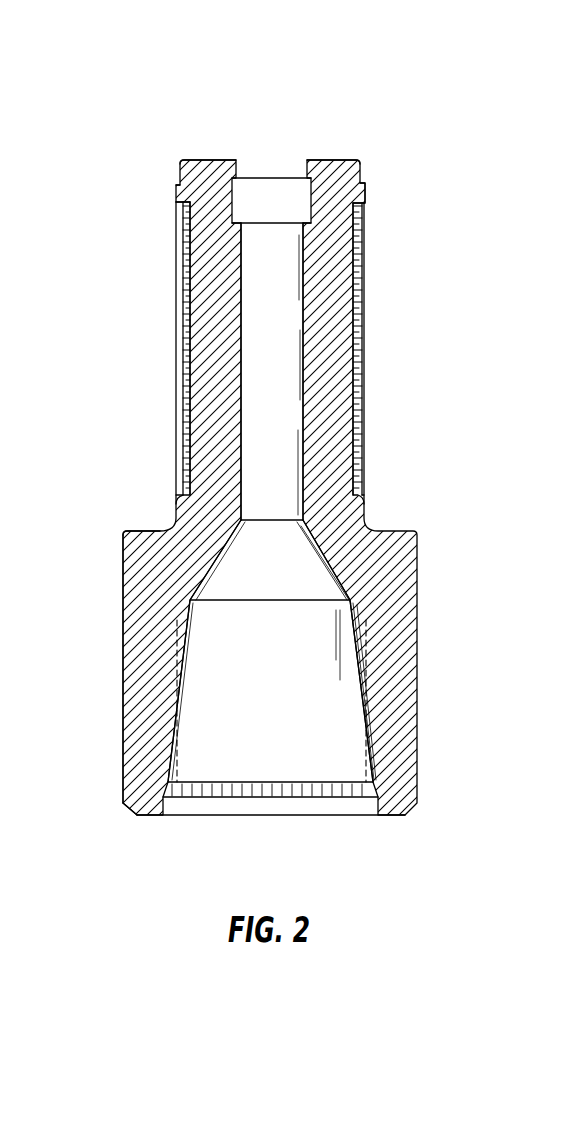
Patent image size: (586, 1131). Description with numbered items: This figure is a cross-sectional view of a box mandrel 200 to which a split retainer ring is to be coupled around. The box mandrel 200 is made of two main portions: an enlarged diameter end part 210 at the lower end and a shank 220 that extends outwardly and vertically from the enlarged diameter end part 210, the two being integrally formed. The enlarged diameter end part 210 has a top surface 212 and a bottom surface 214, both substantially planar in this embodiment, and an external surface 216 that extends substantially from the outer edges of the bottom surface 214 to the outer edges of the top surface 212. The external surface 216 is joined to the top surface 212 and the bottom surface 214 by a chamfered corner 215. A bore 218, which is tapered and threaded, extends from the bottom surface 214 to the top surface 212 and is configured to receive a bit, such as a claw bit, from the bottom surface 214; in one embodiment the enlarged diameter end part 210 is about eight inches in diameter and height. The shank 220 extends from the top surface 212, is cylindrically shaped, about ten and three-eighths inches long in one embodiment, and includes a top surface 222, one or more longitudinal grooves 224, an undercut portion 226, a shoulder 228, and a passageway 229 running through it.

The box mandrel 200 is at (133, 50).
The enlarged diameter end part 210 is at (145, 623).
The top surface 212 is at (140, 530).
The bottom surface 214 is at (145, 815).
The chamfered corner 215 is at (128, 532).
The external surface 216 is at (123, 688).
The bore 218 is at (180, 703).
The shank 220 is at (203, 337).
The top surface 222 is at (197, 160).
The longitudinal grooves 224 is at (175, 400).
The undercut portion 226 is at (182, 230).
The shoulder 228 is at (175, 195).
The passageway 229 is at (242, 323).